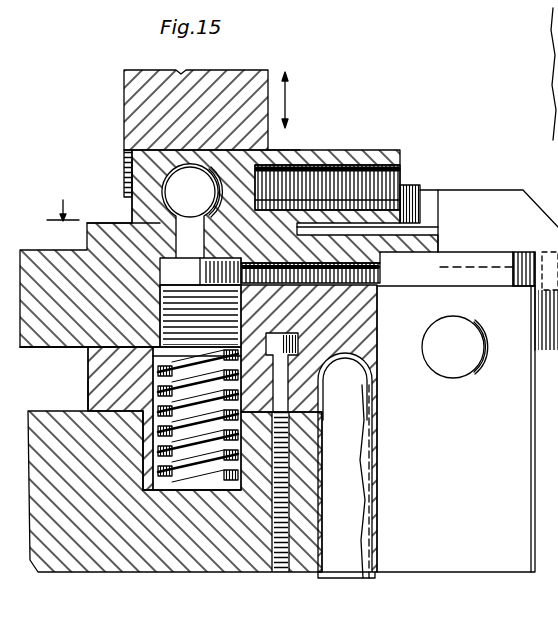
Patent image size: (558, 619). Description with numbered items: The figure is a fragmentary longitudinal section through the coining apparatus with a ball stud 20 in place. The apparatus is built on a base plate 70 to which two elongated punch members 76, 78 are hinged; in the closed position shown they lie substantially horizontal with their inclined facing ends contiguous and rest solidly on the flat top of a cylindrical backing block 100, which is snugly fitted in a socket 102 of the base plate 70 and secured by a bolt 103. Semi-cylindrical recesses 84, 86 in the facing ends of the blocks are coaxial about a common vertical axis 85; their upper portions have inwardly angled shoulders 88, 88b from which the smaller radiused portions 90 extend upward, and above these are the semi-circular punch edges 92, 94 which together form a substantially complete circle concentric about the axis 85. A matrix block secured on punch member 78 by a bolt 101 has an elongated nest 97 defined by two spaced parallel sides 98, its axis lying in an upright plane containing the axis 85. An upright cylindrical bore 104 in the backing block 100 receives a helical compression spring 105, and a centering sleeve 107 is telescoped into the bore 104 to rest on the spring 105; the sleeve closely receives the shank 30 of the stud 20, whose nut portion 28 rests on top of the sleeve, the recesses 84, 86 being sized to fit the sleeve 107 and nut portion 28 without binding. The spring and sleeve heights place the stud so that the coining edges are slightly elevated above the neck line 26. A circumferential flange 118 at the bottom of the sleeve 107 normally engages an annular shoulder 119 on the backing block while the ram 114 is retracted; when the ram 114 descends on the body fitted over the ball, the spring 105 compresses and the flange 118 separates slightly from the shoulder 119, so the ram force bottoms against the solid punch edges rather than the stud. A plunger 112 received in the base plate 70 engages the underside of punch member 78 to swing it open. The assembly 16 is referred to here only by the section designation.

The ball joint assembly 16 is at (63, 199).
The ball stud 20 is at (157, 372).
The neck line 26 is at (200, 226).
The nut portion 28 is at (173, 266).
The shank 30 is at (160, 317).
The base plate 70 is at (32, 490).
The punch member 76 is at (54, 367).
The punch member 78 is at (350, 323).
The semi-cylindrical recess 84 is at (165, 305).
The vertical axis 85 is at (197, 182).
The semi-cylindrical recess 86 is at (244, 300).
The inwardly angled shoulder 88 is at (152, 255).
The inwardly angled shoulder 88b is at (250, 236).
The smaller radiused portion 90 is at (280, 148).
The punch edge 92 is at (132, 191).
The punch edge 94 is at (310, 153).
The nest 97 is at (440, 200).
The parallel sides 98 is at (420, 230).
The backing block 100 is at (88, 387).
The bolt 101 is at (342, 284).
The socket 102 is at (147, 455).
The bolt 103 is at (273, 538).
The cylindrical bore 104 is at (145, 470).
The helical compression spring 105 is at (208, 462).
The centering sleeve 107 is at (160, 350).
The plunger 112 is at (380, 529).
The ram 114 is at (124, 92).
The circumferential flange 118 is at (238, 364).
The annular shoulder 119 is at (58, 348).